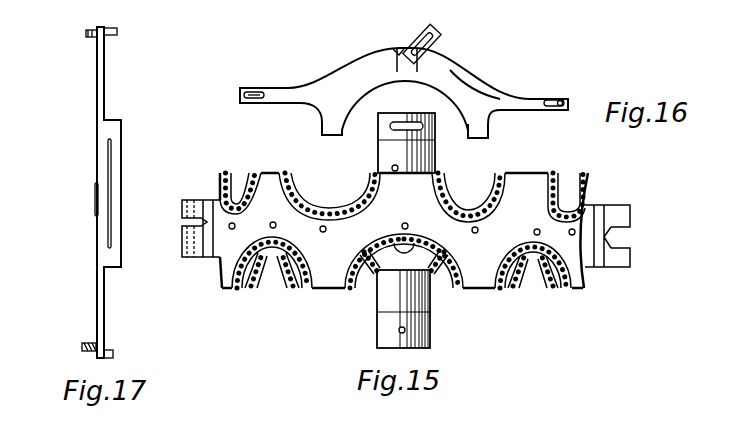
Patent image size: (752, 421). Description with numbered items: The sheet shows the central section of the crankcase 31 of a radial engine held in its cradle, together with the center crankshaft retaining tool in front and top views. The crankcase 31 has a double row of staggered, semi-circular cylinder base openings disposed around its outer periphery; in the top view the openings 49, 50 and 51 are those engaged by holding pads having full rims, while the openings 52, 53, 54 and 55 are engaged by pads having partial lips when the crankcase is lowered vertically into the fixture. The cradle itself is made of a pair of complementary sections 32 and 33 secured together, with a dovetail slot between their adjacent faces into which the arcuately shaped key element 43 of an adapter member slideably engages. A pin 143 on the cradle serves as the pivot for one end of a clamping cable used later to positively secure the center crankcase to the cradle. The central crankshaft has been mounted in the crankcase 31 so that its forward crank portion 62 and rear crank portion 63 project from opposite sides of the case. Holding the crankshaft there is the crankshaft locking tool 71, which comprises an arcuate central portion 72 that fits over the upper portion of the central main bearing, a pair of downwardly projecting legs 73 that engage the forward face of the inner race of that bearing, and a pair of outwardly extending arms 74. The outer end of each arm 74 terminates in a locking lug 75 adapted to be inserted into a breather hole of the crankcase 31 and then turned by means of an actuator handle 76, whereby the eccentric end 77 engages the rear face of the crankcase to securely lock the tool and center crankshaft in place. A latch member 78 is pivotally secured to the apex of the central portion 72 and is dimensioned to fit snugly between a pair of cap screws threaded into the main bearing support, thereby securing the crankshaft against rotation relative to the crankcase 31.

In FIG. 15, the central section of the crankcase 31 is at (537, 212).
In FIG. 15, the complementary cradle section 32 is at (623, 213).
In FIG. 15, the complementary cradle section 33 is at (623, 260).
In FIG. 15, the arcuately shaped key element 43 is at (607, 238).
In FIG. 15, the cylinder base opening 49 is at (445, 183).
In FIG. 15, the cylinder base opening 50 is at (446, 283).
In FIG. 15, the cylinder base opening 51 is at (360, 283).
In FIG. 15, the cylinder base opening 52 is at (557, 200).
In FIG. 15, the cylinder base opening 53 is at (562, 290).
In FIG. 15, the cylinder base opening 54 is at (296, 180).
In FIG. 15, the cylinder base opening 55 is at (301, 288).
In FIG. 15, the forward crank portion 62 is at (380, 337).
In FIG. 15, the rear crank portion 63 is at (390, 154).
In FIG. 17, the crankshaft locking tool 71 is at (117, 163).
In FIG. 16, the crankshaft locking tool 71 is at (440, 66).
In FIG. 16, the arcuate central portion 72 is at (395, 50).
In FIG. 16, the downwardly projecting legs 73 is at (324, 128).
In FIG. 17, the outwardly extending arms 74 is at (97, 92).
In FIG. 16, the outwardly extending arms 74 is at (280, 96).
In FIG. 17, the locking lug 75 is at (107, 36).
In FIG. 17, the actuator handle 76 is at (86, 33).
In FIG. 16, the actuator handle 76 is at (243, 101).
In FIG. 17, the eccentric end 77 is at (118, 30).
In FIG. 16, the latch member 78 is at (440, 30).
In FIG. 15, the pin 143 is at (186, 230).